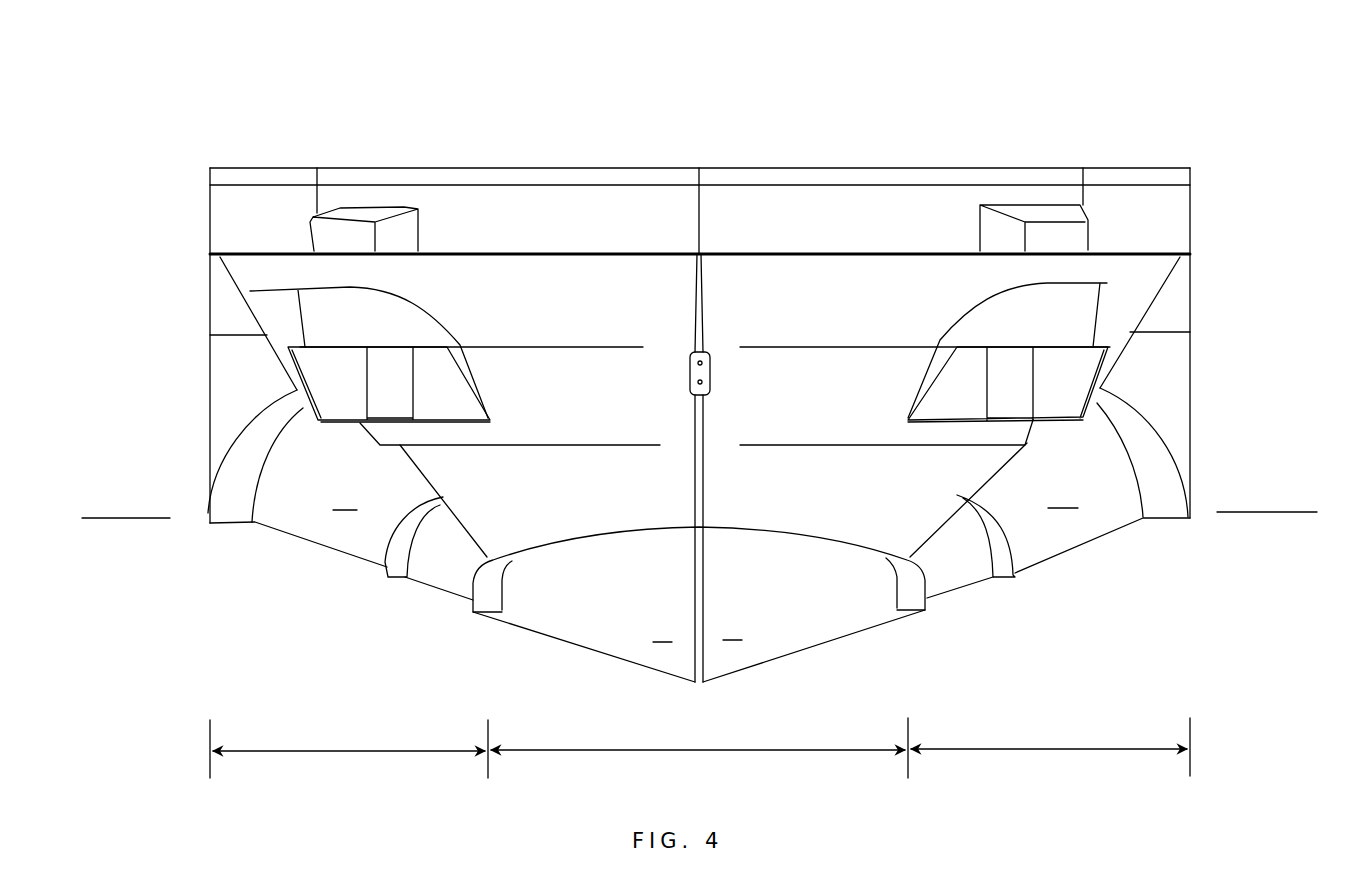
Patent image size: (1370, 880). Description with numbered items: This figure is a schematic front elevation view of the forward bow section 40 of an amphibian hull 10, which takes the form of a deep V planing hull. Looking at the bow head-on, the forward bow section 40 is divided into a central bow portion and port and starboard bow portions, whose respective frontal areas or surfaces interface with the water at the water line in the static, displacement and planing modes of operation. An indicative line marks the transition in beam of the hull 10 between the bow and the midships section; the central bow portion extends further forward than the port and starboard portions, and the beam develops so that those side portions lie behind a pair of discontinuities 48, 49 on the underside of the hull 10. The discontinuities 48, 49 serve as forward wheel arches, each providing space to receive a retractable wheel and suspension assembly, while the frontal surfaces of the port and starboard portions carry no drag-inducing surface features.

The amphibian hull 10 is at (958, 75).
The forward bow section 40 is at (118, 312).
The discontinuity 48 is at (255, 565).
The discontinuity 49 is at (1110, 565).